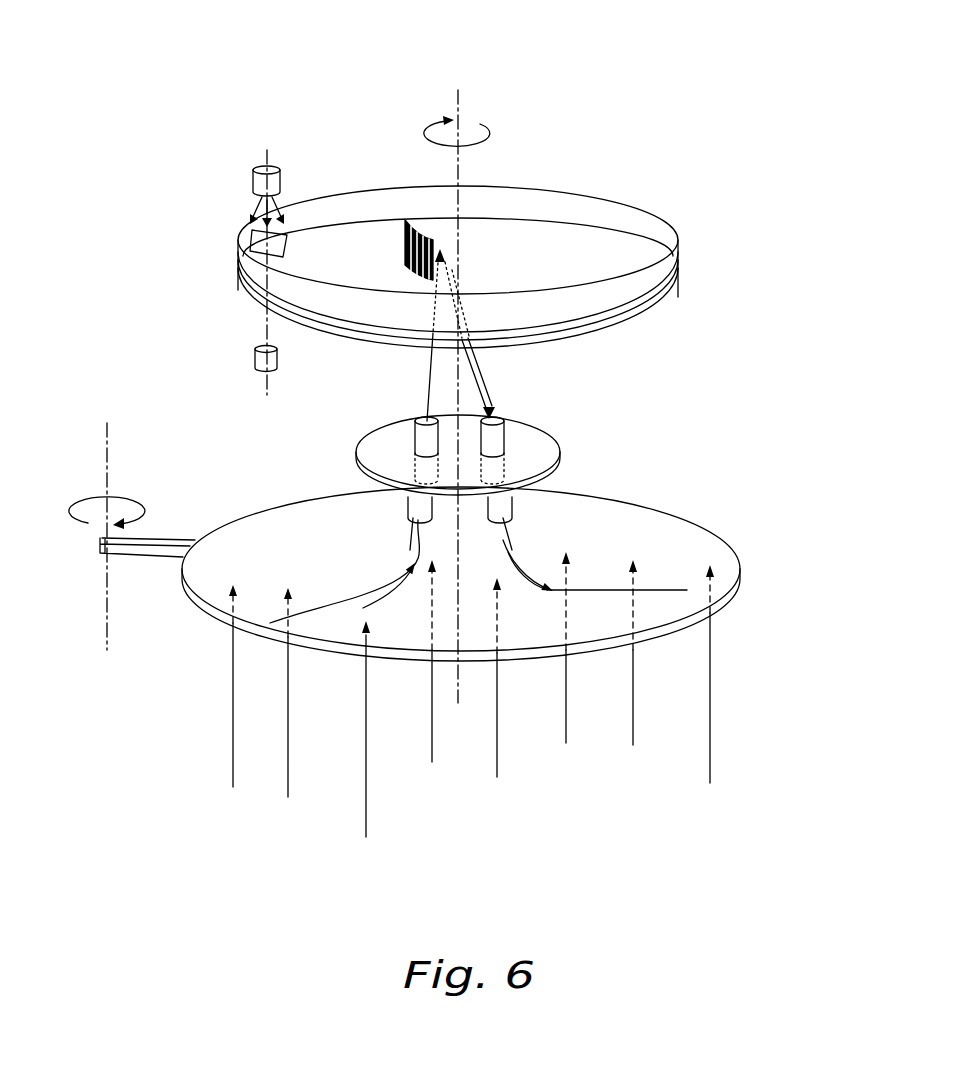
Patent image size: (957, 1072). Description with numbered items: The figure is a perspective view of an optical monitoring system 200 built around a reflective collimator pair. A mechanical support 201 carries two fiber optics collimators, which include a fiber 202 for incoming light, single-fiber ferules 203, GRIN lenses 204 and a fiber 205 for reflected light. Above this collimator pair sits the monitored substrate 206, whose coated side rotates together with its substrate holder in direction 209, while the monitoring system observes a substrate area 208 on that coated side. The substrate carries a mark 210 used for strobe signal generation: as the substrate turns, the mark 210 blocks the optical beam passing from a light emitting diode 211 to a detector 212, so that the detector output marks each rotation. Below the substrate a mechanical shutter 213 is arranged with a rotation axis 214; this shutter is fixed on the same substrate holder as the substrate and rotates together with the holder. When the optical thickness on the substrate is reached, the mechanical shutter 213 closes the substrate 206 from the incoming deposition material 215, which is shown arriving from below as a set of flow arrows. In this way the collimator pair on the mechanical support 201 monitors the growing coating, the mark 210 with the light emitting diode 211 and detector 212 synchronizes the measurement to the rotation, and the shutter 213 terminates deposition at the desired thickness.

The optical monitoring system 200 is at (720, 180).
The mechanical support 201 is at (373, 428).
The fiber for incoming light 202 is at (405, 552).
The single-fiber ferules 203 is at (433, 517).
The GRIN lenses 204 is at (428, 444).
The fiber for reflected light 205 is at (653, 590).
The monitored substrate 206 is at (575, 222).
The substrate area 208 is at (405, 247).
The direction 209 is at (458, 107).
The mark 210 is at (248, 236).
The light emitting diode 211 is at (280, 181).
The detector 212 is at (255, 358).
The mechanical shutter 213 is at (735, 560).
The rotation axis 214 is at (113, 533).
The incoming deposition material 215 is at (471, 694).